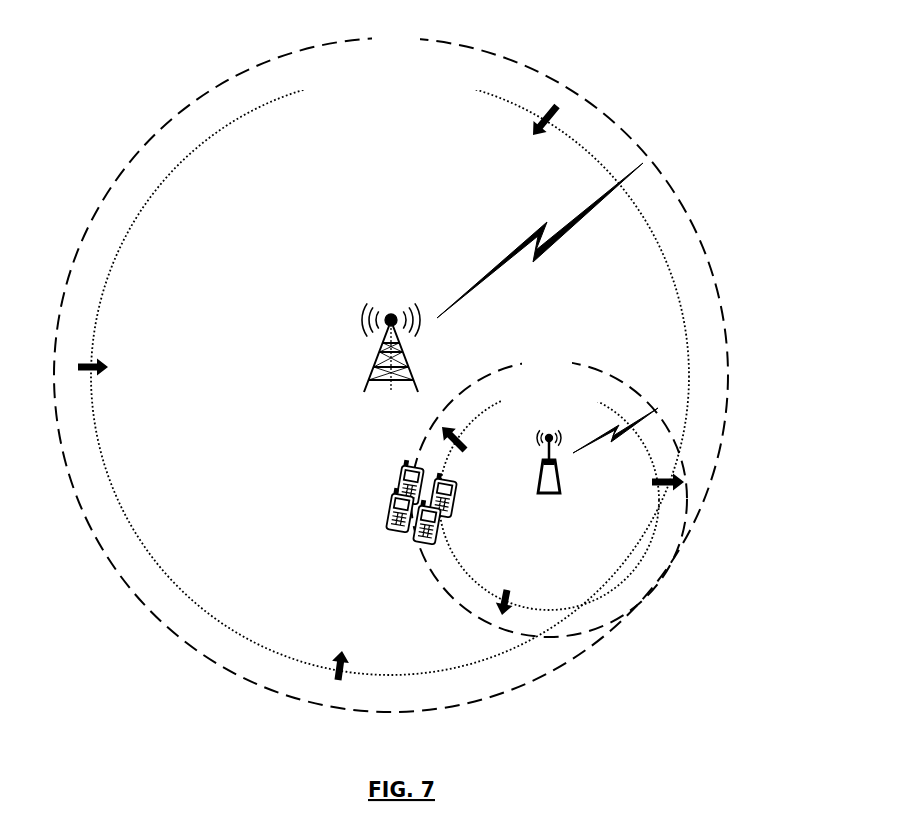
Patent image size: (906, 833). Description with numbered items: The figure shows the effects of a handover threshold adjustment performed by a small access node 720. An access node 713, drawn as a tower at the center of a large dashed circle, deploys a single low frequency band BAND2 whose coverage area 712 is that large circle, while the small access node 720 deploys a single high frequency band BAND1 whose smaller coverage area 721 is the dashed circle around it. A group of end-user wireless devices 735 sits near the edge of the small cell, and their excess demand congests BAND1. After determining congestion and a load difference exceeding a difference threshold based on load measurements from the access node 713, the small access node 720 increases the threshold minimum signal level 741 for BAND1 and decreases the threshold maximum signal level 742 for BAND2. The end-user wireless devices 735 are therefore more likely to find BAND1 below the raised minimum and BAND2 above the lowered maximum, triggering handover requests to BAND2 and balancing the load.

The coverage area 712 is at (391, 370).
The threshold maximum signal level 742 is at (383, 362).
The access node 713 is at (357, 347).
The small access node 720 is at (583, 478).
The coverage area 721 is at (549, 515).
The threshold minimum signal level 741 is at (582, 522).
The end-user wireless devices 735 is at (405, 553).